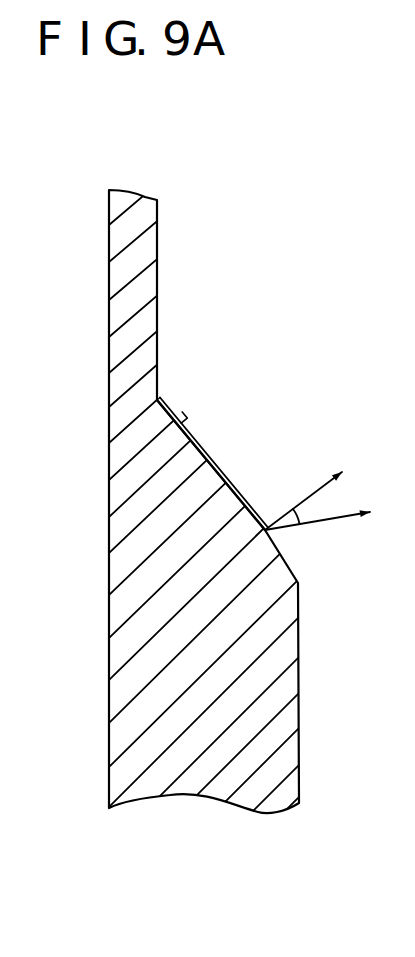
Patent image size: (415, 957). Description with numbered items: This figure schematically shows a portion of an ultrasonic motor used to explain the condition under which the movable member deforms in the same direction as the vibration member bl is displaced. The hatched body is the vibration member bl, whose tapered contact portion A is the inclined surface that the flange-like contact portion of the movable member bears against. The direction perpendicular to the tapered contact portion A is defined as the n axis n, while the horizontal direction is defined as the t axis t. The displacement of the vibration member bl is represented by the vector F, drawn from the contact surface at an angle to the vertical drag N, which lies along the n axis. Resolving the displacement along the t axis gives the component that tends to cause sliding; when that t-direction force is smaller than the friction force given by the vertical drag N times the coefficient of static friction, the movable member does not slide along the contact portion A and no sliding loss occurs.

The vibration member bl is at (183, 583).
The tapered contact portion A is at (162, 399).
The t axis t is at (210, 463).
The n axis n is at (176, 417).
The vertical drag N is at (314, 489).
The amount of displacement of the vibration member F is at (347, 521).